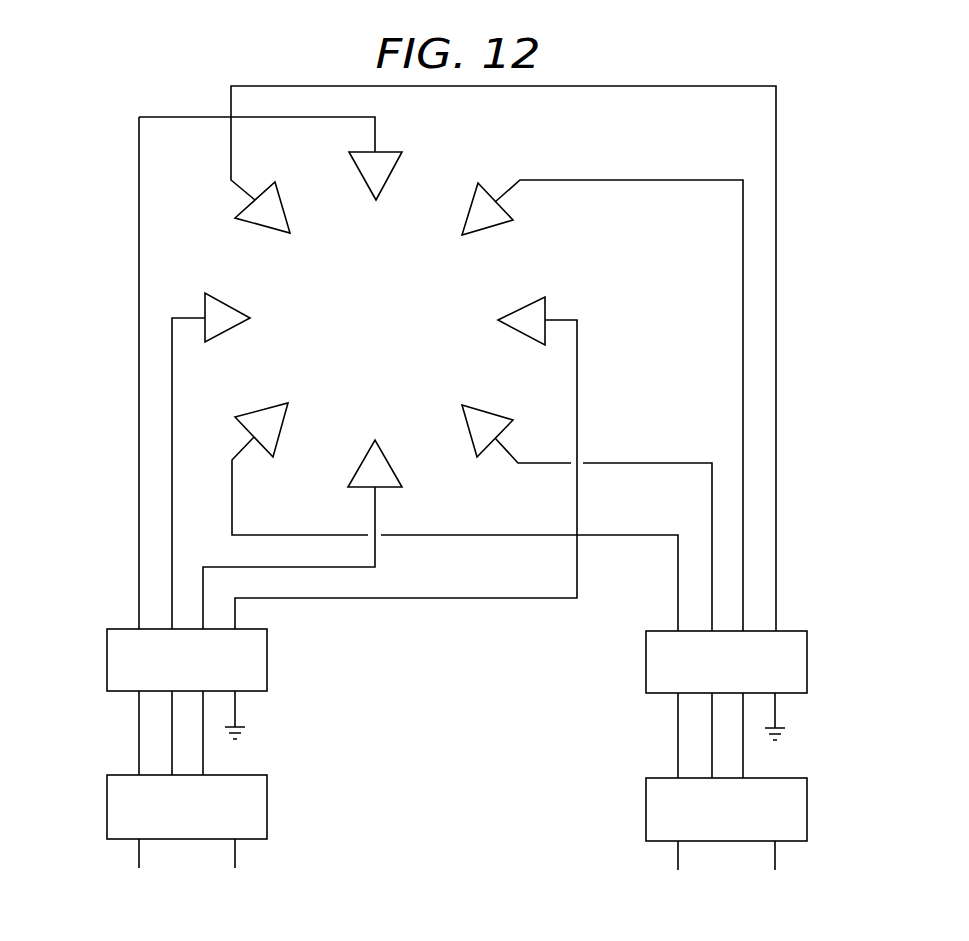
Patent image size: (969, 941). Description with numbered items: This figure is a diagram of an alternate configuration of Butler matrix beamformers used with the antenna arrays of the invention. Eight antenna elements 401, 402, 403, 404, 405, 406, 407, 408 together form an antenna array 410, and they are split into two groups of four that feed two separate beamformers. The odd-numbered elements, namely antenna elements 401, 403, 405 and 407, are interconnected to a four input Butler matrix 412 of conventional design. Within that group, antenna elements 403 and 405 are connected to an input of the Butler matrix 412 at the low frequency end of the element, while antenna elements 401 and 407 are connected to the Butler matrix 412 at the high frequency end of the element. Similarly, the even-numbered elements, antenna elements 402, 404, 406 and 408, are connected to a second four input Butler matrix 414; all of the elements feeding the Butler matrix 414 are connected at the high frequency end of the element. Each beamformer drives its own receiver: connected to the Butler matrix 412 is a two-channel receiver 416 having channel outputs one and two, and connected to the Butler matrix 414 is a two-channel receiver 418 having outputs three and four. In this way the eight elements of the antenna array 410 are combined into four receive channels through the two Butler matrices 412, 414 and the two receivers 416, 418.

The antenna array 410 is at (290, 70).
The antenna element 401 is at (361, 178).
The antenna element 402 is at (490, 228).
The antenna element 403 is at (547, 304).
The antenna element 404 is at (490, 407).
The antenna element 405 is at (390, 463).
The antenna element 406 is at (263, 408).
The antenna element 407 is at (237, 302).
The antenna element 408 is at (262, 228).
The four input Butler matrix 412 is at (106, 658).
The four input Butler matrix 414 is at (808, 665).
The two-channel receiver 416 is at (106, 806).
The two-channel receiver 418 is at (808, 812).